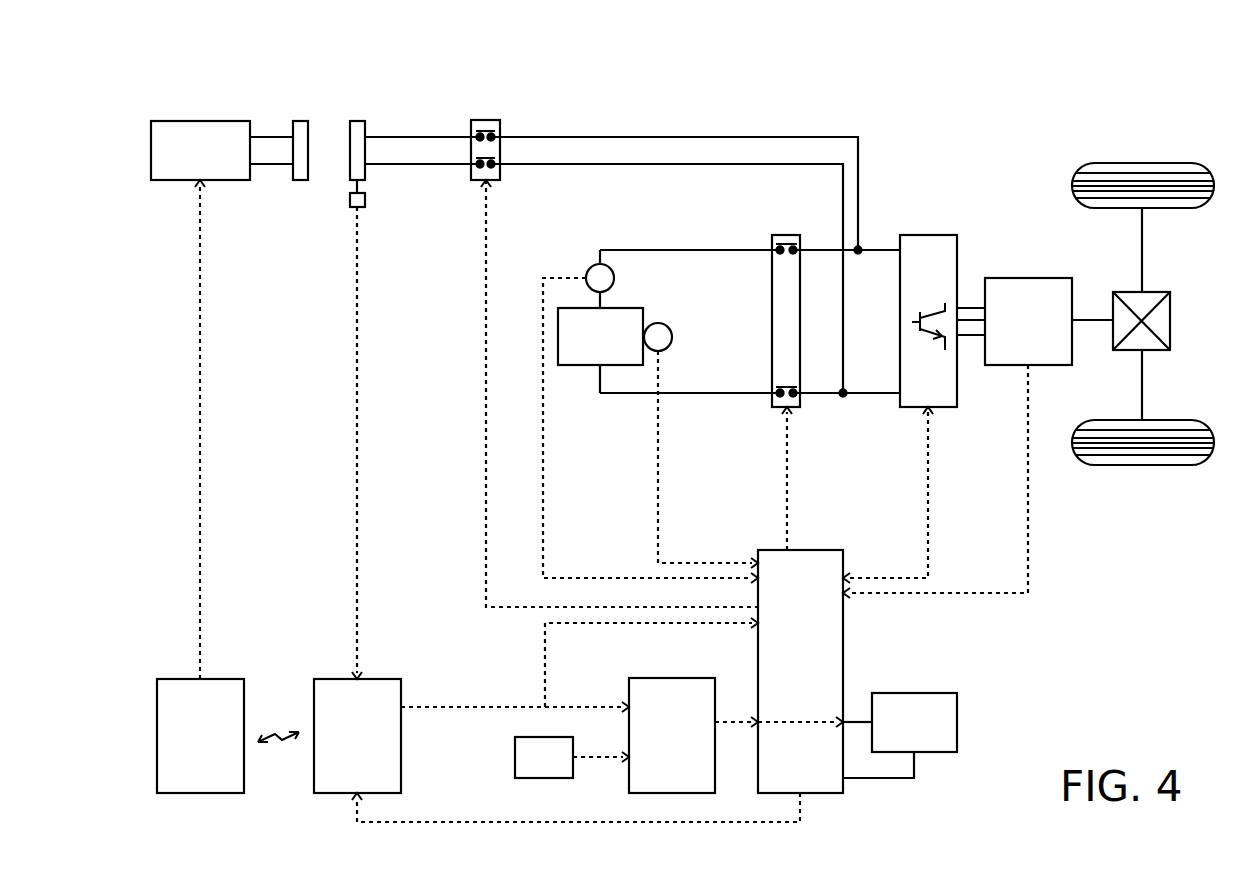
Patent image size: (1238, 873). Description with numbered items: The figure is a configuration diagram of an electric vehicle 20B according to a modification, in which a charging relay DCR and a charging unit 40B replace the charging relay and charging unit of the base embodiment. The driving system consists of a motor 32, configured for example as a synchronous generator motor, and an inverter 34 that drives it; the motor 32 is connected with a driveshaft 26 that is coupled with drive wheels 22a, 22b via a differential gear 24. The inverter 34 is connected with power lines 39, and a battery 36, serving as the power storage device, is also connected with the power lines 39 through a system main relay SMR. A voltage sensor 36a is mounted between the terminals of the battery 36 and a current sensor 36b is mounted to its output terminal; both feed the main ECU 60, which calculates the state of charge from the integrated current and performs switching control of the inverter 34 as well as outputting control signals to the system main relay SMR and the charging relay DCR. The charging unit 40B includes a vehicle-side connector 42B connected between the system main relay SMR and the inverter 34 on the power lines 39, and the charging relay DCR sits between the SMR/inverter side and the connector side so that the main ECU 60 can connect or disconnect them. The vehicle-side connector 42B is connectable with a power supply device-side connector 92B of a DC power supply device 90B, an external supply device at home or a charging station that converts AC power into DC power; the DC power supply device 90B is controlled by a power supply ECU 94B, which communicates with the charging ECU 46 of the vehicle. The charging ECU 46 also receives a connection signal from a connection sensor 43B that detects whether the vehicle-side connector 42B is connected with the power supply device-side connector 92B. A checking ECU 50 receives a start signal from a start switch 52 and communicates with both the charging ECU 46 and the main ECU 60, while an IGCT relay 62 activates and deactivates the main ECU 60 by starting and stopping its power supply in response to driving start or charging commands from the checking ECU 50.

The electric vehicle 20B is at (856, 56).
The drive wheel 22a is at (1142, 163).
The drive wheel 22b is at (1142, 465).
The differential gear 24 is at (1154, 292).
The driveshaft 26 is at (1086, 320).
The motor 32 is at (1028, 278).
The inverter 34 is at (930, 235).
The battery 36 is at (623, 308).
The voltage sensor 36a is at (658, 323).
The current sensor 36b is at (594, 265).
The power lines 39 is at (736, 252).
The system main relay SMR is at (786, 235).
The charging unit 40B is at (414, 72).
The vehicle-side connector 42B is at (357, 121).
The connection sensor 43B is at (367, 200).
The charging relay DCR is at (486, 120).
The charging ECU 46 is at (378, 679).
The checking ECU 50 is at (672, 678).
The start switch 52 is at (515, 753).
The main ECU 60 is at (815, 550).
The IGCT relay 62 is at (914, 693).
The DC power supply device 90B is at (201, 121).
The power supply device-side connector 92B is at (300, 121).
The power supply ECU 94B is at (228, 679).